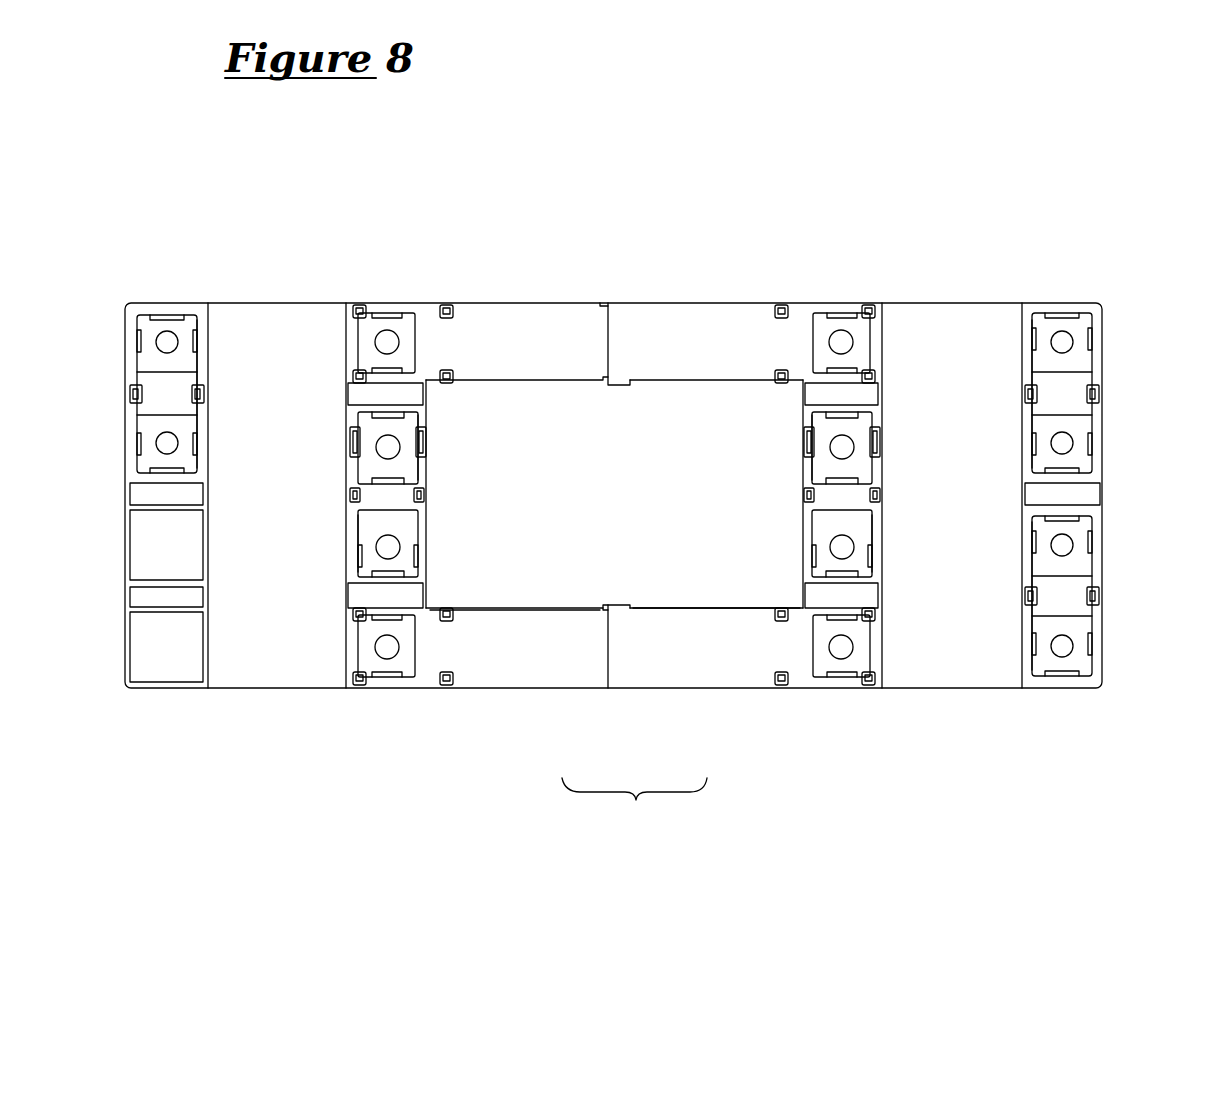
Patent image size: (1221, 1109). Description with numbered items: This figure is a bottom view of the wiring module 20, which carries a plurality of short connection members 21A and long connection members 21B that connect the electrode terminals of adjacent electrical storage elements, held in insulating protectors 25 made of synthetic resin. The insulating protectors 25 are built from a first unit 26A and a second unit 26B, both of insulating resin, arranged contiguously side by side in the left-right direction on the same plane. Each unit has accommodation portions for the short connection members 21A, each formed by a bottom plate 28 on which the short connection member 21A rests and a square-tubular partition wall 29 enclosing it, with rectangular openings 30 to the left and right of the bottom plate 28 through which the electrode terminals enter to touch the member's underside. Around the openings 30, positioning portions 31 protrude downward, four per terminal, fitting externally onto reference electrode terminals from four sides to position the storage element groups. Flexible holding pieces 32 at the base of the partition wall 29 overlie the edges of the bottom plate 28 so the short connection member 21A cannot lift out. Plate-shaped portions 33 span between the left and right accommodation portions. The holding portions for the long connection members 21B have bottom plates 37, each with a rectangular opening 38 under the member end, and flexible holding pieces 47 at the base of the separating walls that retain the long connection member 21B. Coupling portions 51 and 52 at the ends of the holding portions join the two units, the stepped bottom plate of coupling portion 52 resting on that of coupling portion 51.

The wiring module 20 is at (752, 200).
The short connection member 21A is at (180, 330).
The long connection member 21B is at (400, 318).
The insulating protector 25 is at (634, 721).
The first unit 26A is at (553, 700).
The second unit 26B is at (698, 703).
The bottom plate 28 is at (148, 405).
The partition wall 29 is at (423, 567).
The opening 30 is at (198, 440).
The positioning portion 31 is at (352, 445).
The holding piece 32 is at (197, 388).
The plate-shaped portion 33 is at (240, 663).
The bottom plate 37 is at (524, 312).
The rectangular opening 38 is at (423, 345).
The holding piece 47 is at (360, 375).
The coupling portion 51 is at (624, 306).
The coupling portion 52 is at (601, 322).